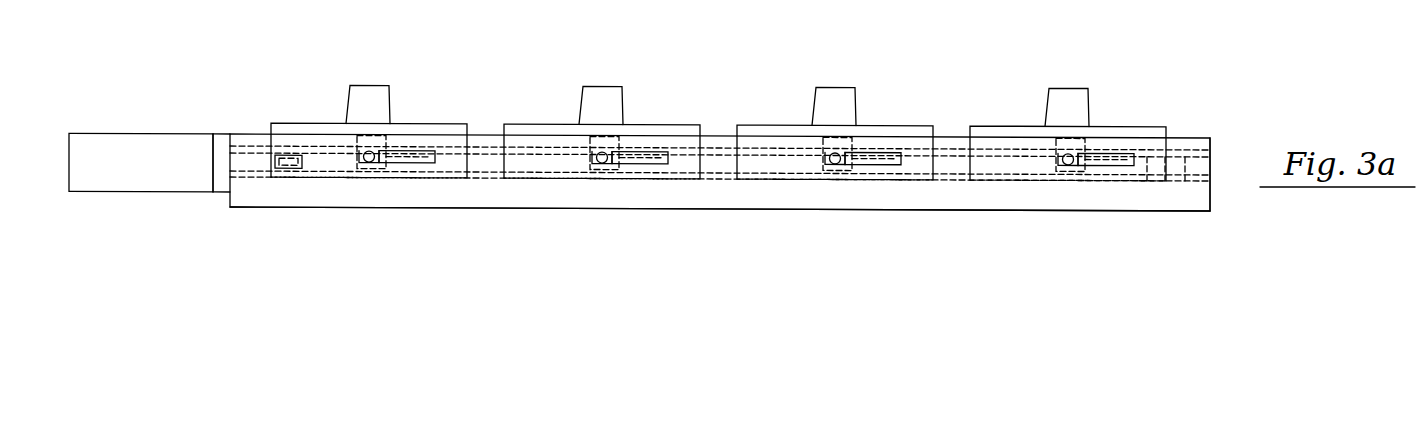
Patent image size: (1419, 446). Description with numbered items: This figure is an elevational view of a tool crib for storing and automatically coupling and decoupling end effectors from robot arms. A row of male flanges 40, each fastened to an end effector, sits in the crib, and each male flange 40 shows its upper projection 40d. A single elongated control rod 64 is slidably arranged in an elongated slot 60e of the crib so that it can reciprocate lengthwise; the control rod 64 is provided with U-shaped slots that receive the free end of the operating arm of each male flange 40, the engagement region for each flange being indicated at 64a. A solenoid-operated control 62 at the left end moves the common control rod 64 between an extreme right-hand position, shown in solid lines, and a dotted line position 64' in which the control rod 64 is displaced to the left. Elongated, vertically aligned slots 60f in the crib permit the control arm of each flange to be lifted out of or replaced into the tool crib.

The solenoid-operated control 62 is at (165, 132).
The male flange 40 is at (427, 123).
The module key / projection 40d is at (349, 92).
The latch member 64a is at (393, 165).
The elongated, vertically aligned slot 60f is at (357, 143).
The elongated slot 60e is at (1195, 150).
The control rod 64 is at (720, 206).
The dotted line position of control rod 64' is at (1202, 194).